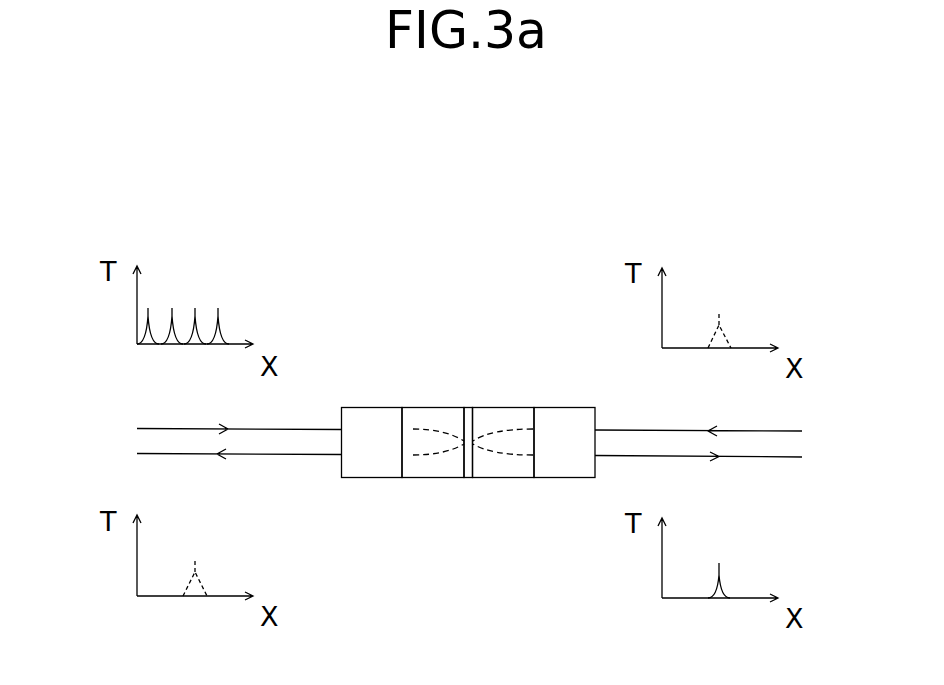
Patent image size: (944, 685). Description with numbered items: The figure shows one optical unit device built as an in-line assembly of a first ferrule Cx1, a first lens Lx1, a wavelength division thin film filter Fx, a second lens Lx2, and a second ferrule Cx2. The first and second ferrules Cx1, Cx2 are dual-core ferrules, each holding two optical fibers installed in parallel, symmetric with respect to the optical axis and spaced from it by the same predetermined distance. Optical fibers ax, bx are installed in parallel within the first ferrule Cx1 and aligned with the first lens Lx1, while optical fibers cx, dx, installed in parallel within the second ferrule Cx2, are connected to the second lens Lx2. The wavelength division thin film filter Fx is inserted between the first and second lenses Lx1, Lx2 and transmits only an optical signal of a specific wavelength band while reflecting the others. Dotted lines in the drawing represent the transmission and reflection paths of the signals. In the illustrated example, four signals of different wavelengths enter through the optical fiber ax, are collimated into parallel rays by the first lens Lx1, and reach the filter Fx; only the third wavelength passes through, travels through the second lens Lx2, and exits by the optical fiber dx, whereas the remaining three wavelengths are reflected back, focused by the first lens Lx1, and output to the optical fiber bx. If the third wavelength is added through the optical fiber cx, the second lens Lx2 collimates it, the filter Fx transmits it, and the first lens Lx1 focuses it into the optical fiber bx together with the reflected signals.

The first ferrule Cx1 is at (365, 407).
The first lens Lx1 is at (443, 407).
The wavelength division thin film filter Fx is at (469, 424).
The second lens Lx2 is at (507, 407).
The second ferrule Cx2 is at (585, 407).
The optical fiber ax is at (239, 415).
The optical fiber bx is at (239, 467).
The optical fiber cx is at (698, 416).
The optical fiber dx is at (698, 468).